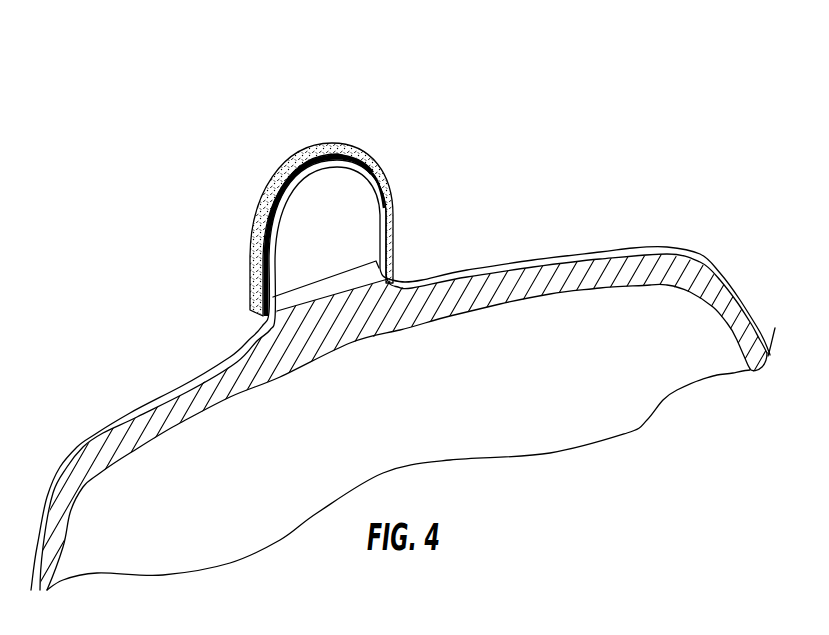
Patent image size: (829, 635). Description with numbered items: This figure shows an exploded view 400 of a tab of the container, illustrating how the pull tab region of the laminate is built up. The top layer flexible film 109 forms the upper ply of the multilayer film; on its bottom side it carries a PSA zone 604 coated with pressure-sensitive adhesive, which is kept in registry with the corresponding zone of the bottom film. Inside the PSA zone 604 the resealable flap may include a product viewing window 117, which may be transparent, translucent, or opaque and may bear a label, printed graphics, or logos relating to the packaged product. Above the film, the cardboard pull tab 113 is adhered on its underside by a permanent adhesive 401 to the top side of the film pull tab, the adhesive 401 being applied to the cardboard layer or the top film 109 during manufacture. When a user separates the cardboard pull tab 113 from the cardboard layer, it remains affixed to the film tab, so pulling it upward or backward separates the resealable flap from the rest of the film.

The panel assembly with hood 400 is at (676, 66).
The top layer flexible film 109 is at (597, 219).
The PSA zone 604 is at (673, 270).
The product viewing window 117 is at (373, 373).
The permanent adhesive 401 is at (340, 158).
The cardboard pull tab 113 is at (265, 205).